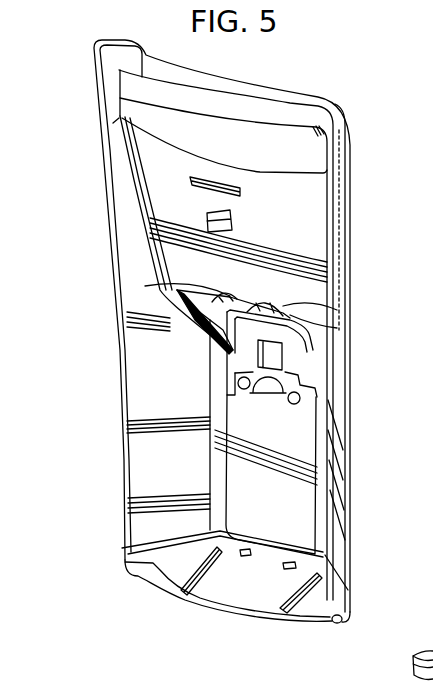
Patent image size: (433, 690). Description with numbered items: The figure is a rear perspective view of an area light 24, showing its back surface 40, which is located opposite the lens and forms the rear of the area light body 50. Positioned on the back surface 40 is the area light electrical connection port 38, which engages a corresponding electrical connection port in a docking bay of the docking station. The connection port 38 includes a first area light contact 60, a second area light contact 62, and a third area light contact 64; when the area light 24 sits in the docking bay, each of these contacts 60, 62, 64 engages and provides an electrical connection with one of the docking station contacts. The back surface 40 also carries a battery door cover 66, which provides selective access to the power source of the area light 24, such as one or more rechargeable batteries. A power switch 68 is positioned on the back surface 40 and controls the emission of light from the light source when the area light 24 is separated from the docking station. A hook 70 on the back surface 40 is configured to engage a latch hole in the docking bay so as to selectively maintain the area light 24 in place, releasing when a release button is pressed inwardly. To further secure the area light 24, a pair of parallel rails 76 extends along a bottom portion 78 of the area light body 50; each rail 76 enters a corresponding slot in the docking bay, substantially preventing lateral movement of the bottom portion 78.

The area light 24 is at (103, 173).
The area light electrical connection port 38 is at (183, 304).
The back surface 40 is at (328, 223).
The area light body 50 is at (130, 336).
The first area light contact 60 is at (330, 328).
The second area light contact 62 is at (322, 306).
The third area light contact 64 is at (178, 289).
The battery door cover 66 is at (300, 512).
The power switch 68 is at (277, 355).
The hook 70 is at (232, 222).
The parallel rails 76 is at (193, 585).
The bottom portion 78 is at (167, 560).